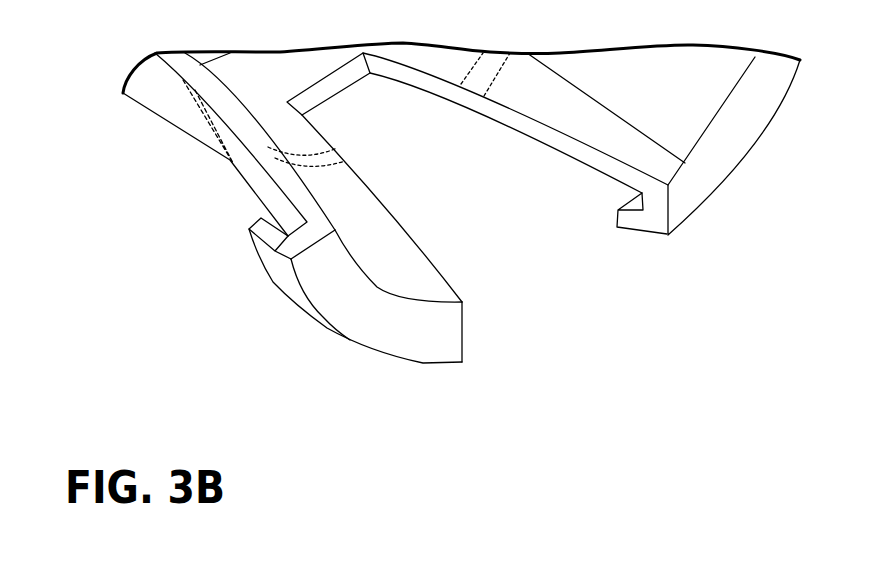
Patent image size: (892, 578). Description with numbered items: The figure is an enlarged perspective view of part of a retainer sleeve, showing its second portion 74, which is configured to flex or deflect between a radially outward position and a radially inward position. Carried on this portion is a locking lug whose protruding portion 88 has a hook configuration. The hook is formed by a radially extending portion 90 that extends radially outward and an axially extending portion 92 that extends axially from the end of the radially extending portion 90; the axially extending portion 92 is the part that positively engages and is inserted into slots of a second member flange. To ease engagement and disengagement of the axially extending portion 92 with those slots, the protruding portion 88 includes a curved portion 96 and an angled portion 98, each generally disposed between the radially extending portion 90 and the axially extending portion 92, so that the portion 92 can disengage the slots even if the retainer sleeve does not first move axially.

The second portion 74 is at (568, 190).
The protruding portion 88 is at (479, 331).
The radially extending portion 90 is at (375, 314).
The axially extending portion 92 is at (259, 304).
The curved portion 96 is at (263, 252).
The angled portion 98 is at (655, 228).